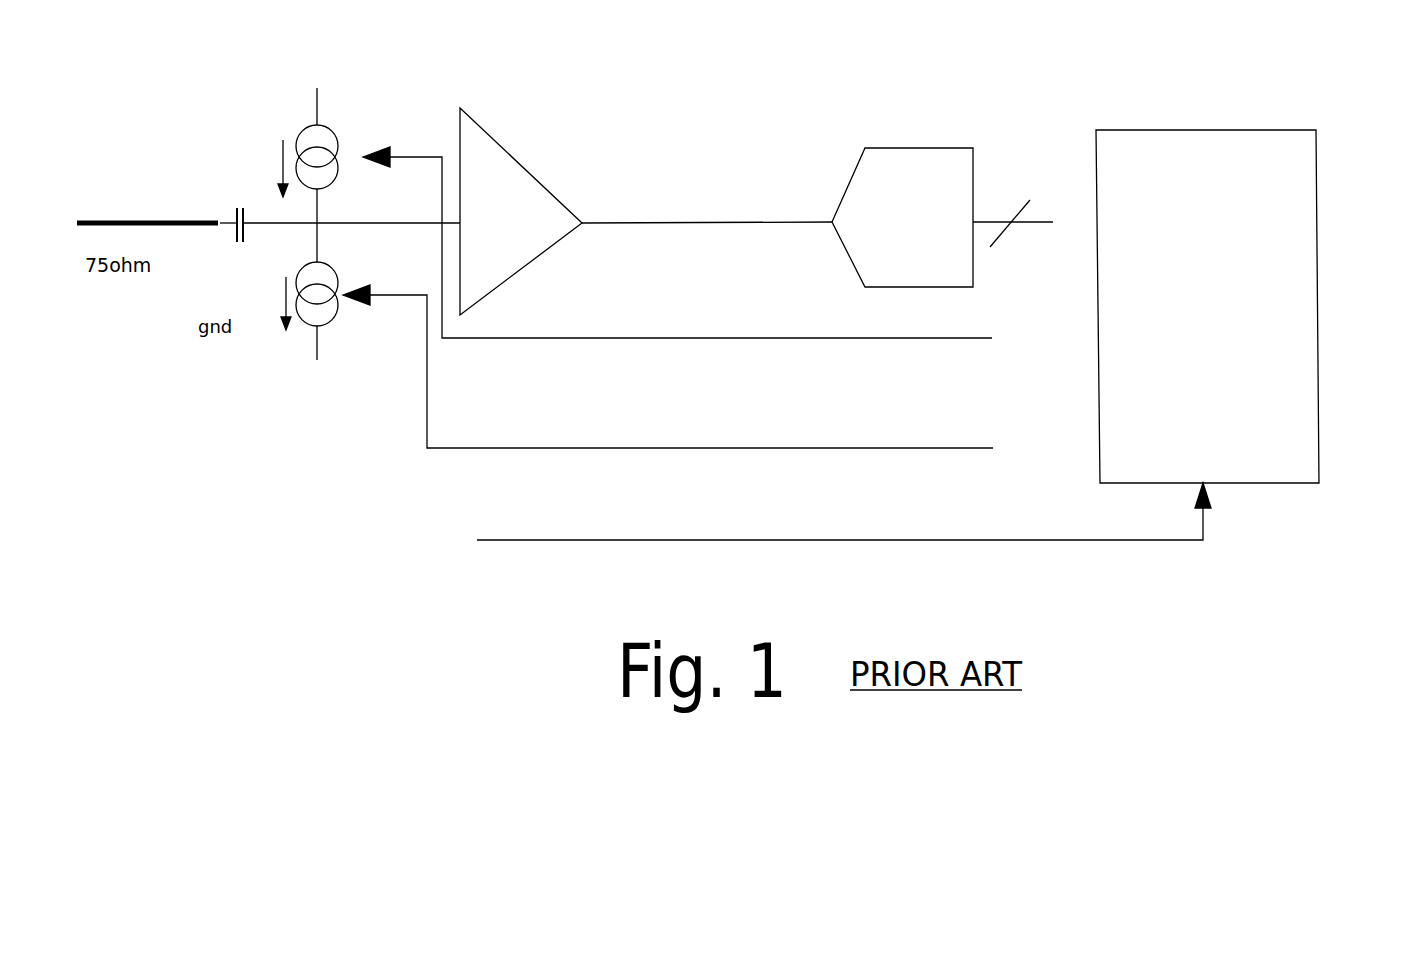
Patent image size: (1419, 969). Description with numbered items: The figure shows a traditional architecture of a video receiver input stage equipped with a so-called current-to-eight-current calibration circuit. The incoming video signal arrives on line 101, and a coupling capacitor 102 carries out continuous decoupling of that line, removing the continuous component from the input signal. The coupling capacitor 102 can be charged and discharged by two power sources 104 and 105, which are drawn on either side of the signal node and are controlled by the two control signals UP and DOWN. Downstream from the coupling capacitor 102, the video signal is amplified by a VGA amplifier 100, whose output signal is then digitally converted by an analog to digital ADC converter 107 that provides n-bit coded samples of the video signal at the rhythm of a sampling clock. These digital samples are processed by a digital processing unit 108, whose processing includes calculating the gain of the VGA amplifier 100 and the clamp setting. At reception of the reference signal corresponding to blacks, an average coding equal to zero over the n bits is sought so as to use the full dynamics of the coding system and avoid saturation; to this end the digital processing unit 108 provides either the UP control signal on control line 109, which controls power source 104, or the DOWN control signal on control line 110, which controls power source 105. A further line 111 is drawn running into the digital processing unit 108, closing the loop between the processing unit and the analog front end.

The VGA amplifier 100 is at (518, 160).
The line 101 is at (153, 219).
The coupling capacitor 102 is at (235, 212).
The power source 104 is at (307, 130).
The power source 105 is at (318, 343).
The analog to digital ADC converter 107 is at (938, 145).
The digital processing unit 108 is at (1307, 485).
The control line 109 is at (867, 338).
The control line 110 is at (902, 453).
The input line to digital control loop 111 is at (592, 540).